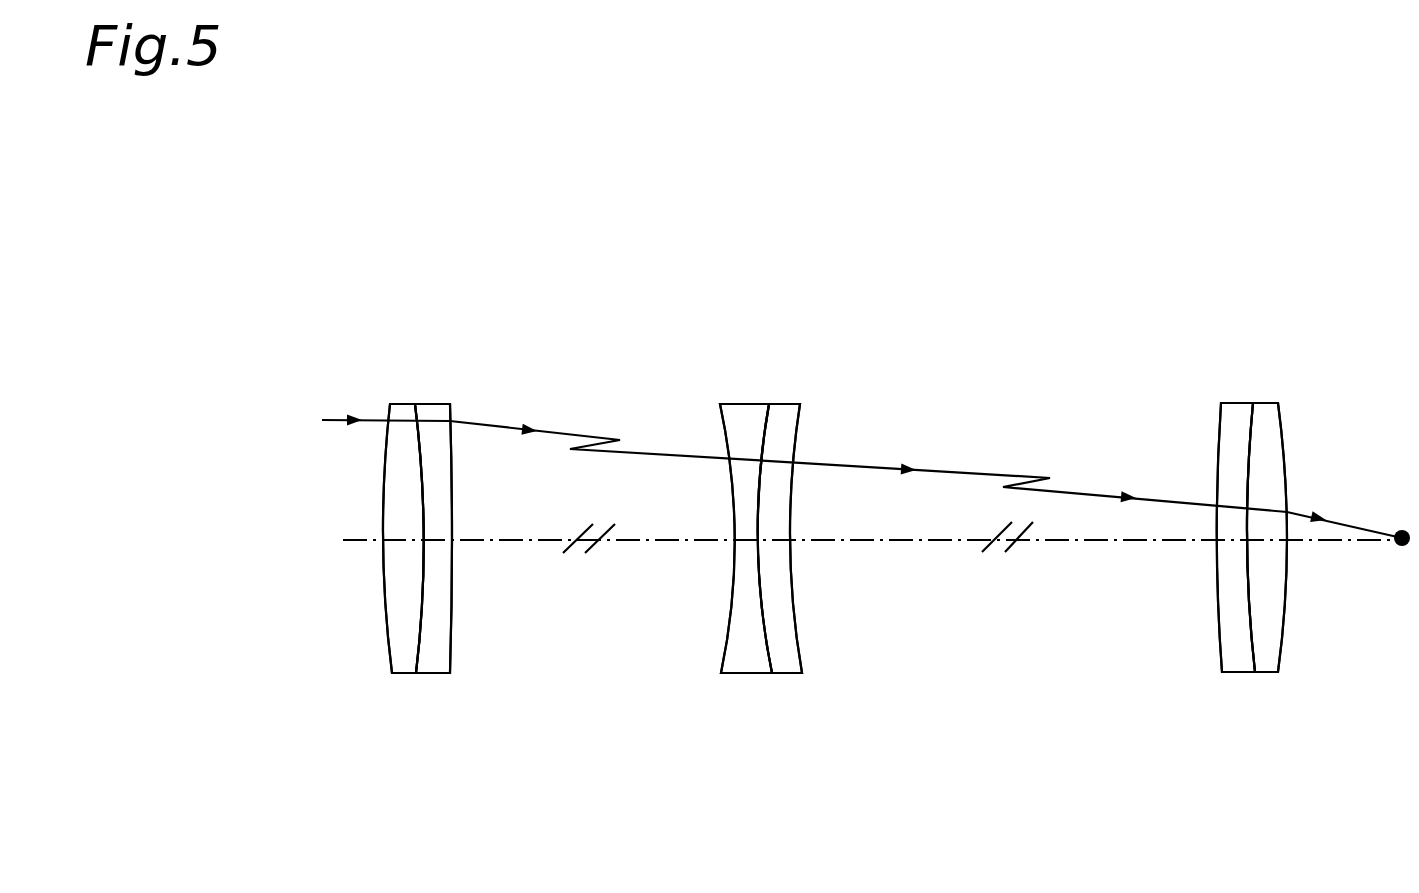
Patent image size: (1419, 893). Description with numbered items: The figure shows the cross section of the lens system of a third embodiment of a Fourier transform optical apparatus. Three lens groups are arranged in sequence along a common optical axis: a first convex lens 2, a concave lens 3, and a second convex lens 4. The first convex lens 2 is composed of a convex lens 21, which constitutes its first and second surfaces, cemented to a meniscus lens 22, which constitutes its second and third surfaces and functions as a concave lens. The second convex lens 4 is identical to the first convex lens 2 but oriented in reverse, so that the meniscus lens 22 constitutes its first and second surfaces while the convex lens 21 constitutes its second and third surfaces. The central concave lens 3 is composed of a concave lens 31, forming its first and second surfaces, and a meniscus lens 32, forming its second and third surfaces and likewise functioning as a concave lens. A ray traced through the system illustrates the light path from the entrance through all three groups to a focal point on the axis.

The first convex lens 2 is at (370, 365).
The concave lens 3 is at (712, 365).
The second convex lens 4 is at (1197, 365).
The convex lens 21 is at (403, 675).
The meniscus lens 22 is at (437, 675).
The concave lens 31 is at (753, 675).
The meniscus lens 32 is at (785, 675).